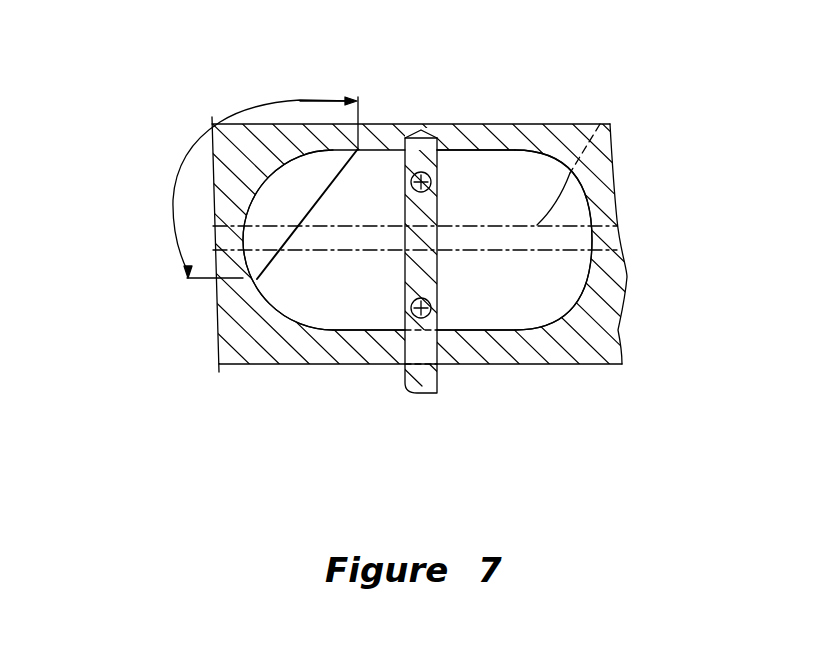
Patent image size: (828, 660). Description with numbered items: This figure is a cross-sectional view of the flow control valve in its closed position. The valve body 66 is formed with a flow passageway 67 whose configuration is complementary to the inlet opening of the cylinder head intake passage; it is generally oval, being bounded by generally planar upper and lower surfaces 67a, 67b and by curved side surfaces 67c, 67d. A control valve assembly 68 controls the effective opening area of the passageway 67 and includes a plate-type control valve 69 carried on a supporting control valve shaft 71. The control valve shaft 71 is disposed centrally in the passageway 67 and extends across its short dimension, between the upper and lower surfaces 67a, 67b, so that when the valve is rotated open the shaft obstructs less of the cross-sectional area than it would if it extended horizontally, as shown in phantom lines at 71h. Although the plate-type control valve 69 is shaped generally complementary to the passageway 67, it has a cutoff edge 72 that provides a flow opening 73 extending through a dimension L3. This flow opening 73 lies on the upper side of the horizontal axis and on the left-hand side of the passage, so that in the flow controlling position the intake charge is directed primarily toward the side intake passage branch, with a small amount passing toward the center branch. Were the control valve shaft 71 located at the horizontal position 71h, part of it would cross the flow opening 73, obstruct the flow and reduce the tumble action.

The valve body 66 is at (258, 124).
The flow passageway 67 is at (523, 162).
The upper surface 67a is at (466, 150).
The lower surface 67b is at (352, 332).
The curved side surface 67c is at (252, 248).
The curved side surface 67d is at (600, 241).
The control valve assembly 68 is at (563, 433).
The plate-type control valve 69 is at (517, 310).
The control valve shaft 71 is at (438, 372).
The horizontal shaft position 71h is at (600, 124).
The cutoff edge 72 is at (180, 180).
The flow opening 73 is at (318, 167).
The dimension L3 is at (285, 99).